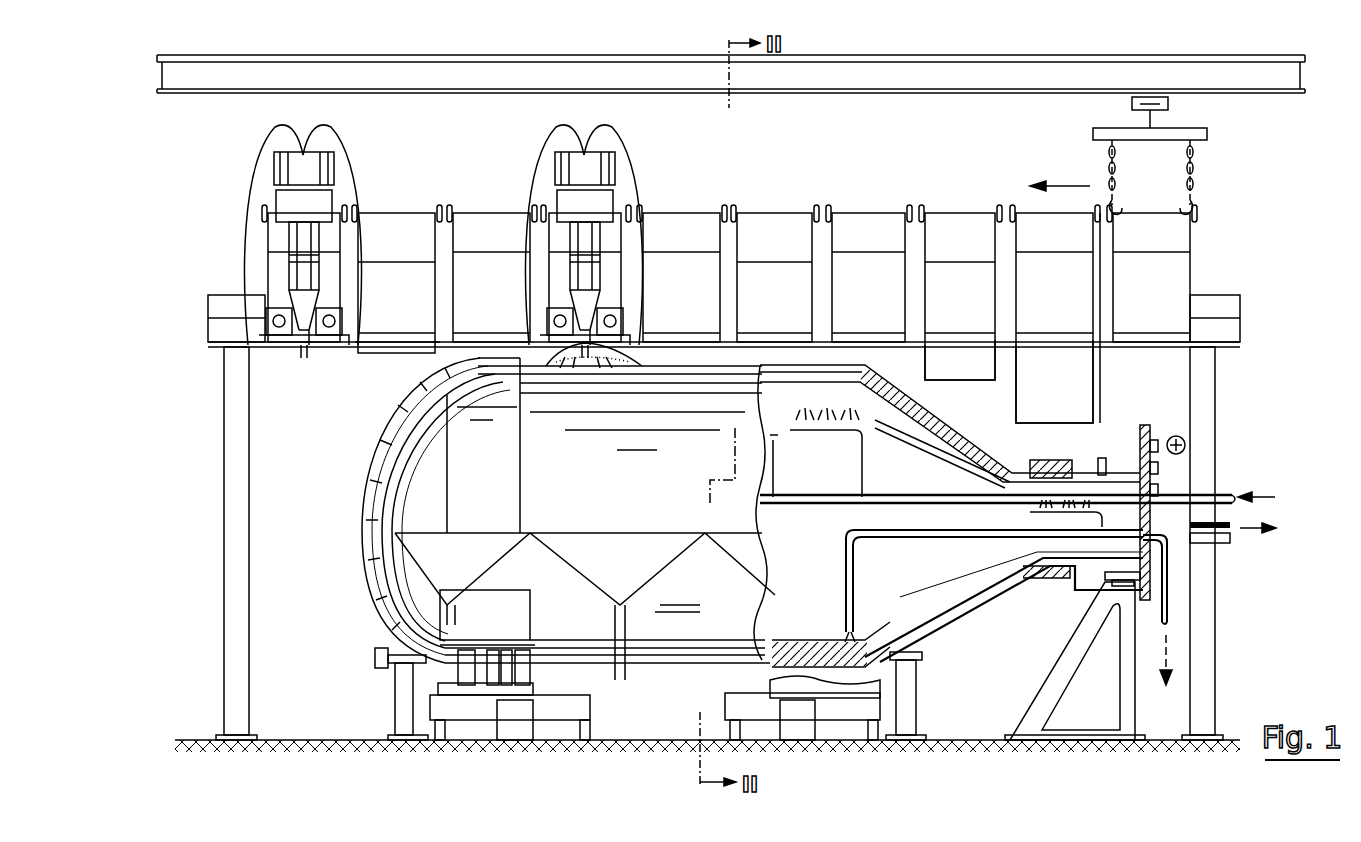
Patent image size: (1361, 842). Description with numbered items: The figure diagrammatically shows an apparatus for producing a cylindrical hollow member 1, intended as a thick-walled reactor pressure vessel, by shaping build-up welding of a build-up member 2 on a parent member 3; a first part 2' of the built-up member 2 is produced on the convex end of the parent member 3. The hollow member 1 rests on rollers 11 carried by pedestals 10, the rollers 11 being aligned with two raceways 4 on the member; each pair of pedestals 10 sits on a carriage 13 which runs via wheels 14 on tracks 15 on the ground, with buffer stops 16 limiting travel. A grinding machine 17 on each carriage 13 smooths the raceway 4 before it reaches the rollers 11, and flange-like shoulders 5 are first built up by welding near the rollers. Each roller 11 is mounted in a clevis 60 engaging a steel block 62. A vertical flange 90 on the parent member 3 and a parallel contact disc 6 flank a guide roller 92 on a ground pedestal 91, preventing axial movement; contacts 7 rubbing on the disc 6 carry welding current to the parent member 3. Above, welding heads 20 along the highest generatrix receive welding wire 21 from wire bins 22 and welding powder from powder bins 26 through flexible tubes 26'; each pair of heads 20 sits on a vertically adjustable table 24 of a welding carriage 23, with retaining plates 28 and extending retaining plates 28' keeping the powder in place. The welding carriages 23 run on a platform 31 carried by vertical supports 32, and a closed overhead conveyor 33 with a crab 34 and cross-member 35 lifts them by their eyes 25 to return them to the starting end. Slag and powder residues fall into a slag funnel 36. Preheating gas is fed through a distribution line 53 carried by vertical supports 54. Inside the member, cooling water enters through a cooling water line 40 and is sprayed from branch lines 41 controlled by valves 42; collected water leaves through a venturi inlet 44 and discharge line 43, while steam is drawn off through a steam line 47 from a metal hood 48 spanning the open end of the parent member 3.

The hollow member 1 is at (352, 457).
The build-up member 2 is at (951, 521).
The first part of the built-up member 2' is at (410, 508).
The parent member 3 is at (395, 548).
The raceway 4 is at (850, 765).
The flange-like shoulder 5 is at (880, 670).
The contact disc 6 is at (1145, 425).
The contact 7 is at (1158, 440).
The pedestal 10 is at (400, 680).
The roller 11 is at (468, 700).
The carriage 13 is at (585, 722).
The wheel 14 is at (745, 725).
The track 15 is at (890, 740).
The buffer stop 16 is at (514, 730).
The grinding machine 17 is at (520, 615).
The welding head 20 is at (279, 348).
The welding wire 21 is at (625, 200).
The wire bin 22 is at (612, 168).
The welding carriage 23 is at (683, 222).
The table 24 is at (960, 372).
The eye 25 is at (1192, 211).
The powder bin 26 is at (491, 256).
The tube 26' is at (499, 343).
The retaining plate 28 is at (616, 358).
The extending retaining plate 28' is at (1112, 318).
The platform 31 is at (228, 296).
The vertical support 32 is at (224, 440).
The overhead conveyor 33 is at (212, 78).
The crab 34 is at (1170, 100).
The cross-member 35 is at (1208, 134).
The slag funnel 36 is at (585, 606).
The cooling water line 40 is at (1232, 495).
The branch line 41 is at (860, 455).
The valve 42 is at (925, 445).
The discharge line 43 is at (1170, 610).
The venturi inlet 44 is at (846, 630).
The steam line 47 is at (1230, 528).
The metal hood 48 is at (1200, 545).
The distribution line 53 is at (375, 655).
The vertical support 54 is at (395, 672).
The clevis 60 is at (528, 668).
The steel block 62 is at (540, 700).
The vertical flange 90 is at (1103, 458).
The pedestal 91 is at (1080, 645).
The guide roller 92 is at (1110, 582).